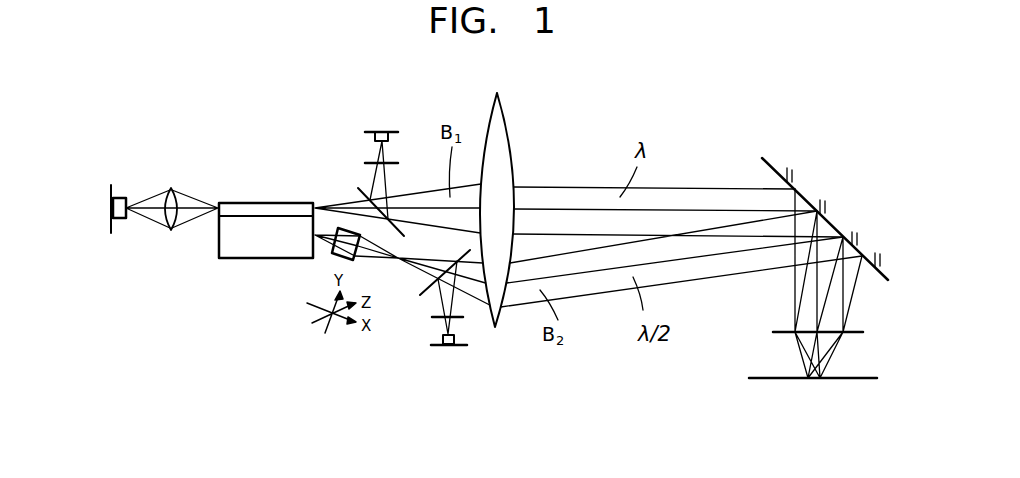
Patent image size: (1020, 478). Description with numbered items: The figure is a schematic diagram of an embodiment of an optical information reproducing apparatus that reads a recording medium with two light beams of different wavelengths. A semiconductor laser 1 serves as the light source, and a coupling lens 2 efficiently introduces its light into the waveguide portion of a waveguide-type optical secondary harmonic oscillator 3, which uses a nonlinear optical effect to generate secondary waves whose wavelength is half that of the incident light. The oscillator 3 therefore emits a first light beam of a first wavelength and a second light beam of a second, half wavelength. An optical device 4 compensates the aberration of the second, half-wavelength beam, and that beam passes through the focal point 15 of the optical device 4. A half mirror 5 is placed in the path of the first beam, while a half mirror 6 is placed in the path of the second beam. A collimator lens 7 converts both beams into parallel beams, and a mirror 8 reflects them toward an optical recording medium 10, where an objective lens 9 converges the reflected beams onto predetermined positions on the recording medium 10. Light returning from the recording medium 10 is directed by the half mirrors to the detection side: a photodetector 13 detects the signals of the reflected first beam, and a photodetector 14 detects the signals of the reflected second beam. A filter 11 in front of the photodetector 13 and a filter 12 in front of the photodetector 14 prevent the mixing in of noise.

The semiconductor laser 1 is at (123, 196).
The coupling lens 2 is at (173, 191).
The waveguide-type optical secondary harmonic oscillator 3 is at (226, 237).
The optical device 4 is at (335, 259).
The half mirror 5 is at (360, 190).
The half mirror 6 is at (432, 286).
The collimator lens 7 is at (514, 162).
The mirror 8 is at (812, 202).
The objective lens 9 is at (787, 330).
The optical recording medium 10 is at (775, 377).
The filter 11 is at (372, 163).
The filter 12 is at (435, 318).
The photodetector 13 is at (395, 130).
The photodetector 14 is at (460, 347).
The focal point 15 is at (400, 258).